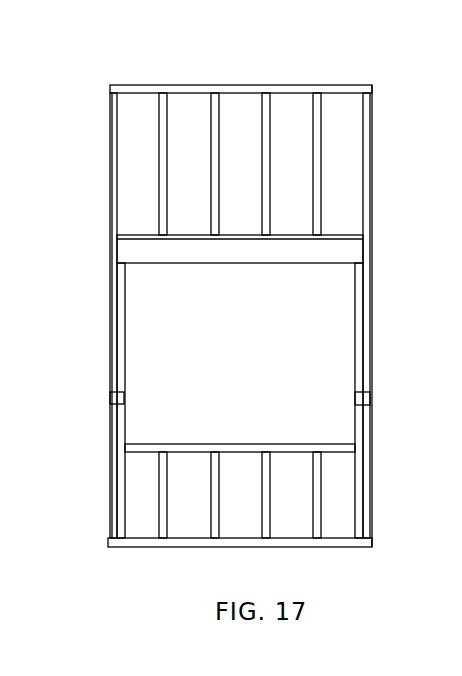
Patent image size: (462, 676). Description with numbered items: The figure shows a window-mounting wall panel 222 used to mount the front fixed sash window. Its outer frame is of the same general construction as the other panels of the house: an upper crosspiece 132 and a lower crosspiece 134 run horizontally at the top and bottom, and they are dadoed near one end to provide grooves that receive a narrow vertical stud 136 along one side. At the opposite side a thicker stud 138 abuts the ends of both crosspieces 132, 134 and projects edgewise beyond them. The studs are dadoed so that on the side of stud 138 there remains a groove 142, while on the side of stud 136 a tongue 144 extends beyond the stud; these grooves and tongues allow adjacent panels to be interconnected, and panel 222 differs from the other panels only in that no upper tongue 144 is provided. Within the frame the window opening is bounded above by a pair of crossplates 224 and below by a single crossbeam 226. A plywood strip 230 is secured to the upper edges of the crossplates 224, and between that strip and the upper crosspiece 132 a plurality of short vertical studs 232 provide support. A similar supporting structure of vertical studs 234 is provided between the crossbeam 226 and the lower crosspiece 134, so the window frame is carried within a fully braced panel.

The panel 222 is at (205, 84).
The upper crosspiece 132 is at (296, 85).
The lower crosspiece 134 is at (291, 546).
The vertical stud 136 is at (362, 136).
The stud 138 is at (110, 130).
The grooves 142 is at (110, 397).
The tongues 144 is at (370, 400).
The crossplates 224 is at (233, 271).
The crossbeam 226 is at (270, 444).
The plywood strip 230 is at (313, 235).
The short vertical studs 232 is at (263, 148).
The vertical studs 234 is at (211, 496).